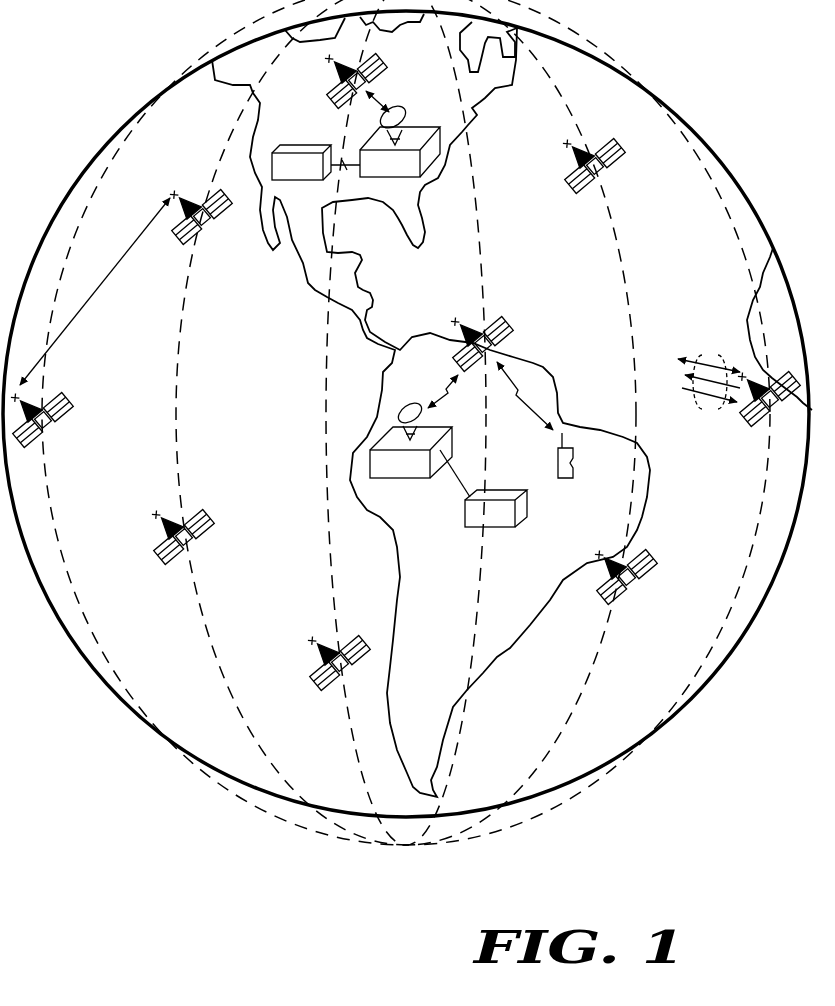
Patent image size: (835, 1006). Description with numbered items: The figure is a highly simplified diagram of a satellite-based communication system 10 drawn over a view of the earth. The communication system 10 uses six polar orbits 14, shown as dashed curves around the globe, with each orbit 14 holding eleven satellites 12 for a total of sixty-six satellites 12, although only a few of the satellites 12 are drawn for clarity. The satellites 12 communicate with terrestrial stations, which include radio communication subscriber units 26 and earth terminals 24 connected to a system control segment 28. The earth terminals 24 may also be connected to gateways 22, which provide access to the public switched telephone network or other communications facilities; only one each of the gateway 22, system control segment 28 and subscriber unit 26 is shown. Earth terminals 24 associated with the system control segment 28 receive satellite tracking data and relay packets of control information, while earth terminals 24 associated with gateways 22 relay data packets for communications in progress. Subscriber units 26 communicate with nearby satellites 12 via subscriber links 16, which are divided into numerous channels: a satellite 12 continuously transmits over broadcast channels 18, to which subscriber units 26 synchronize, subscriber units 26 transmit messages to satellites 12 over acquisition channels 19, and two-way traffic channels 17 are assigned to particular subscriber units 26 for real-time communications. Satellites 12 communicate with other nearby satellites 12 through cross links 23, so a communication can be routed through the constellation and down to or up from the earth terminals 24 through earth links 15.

The communication system 10 is at (401, 942).
The satellite 12 is at (337, 105).
The polar orbit 14 is at (230, 142).
The earth link 15 is at (427, 367).
The subscriber link 16 is at (533, 363).
The traffic channel 17 is at (700, 357).
The broadcast channel 18 is at (685, 372).
The acquisition channel 19 is at (702, 397).
The gateway 22 is at (500, 527).
The cross link 23 is at (112, 272).
The earth terminal 24 is at (424, 126).
The subscriber unit 26 is at (567, 478).
The system control segment 28 is at (287, 182).